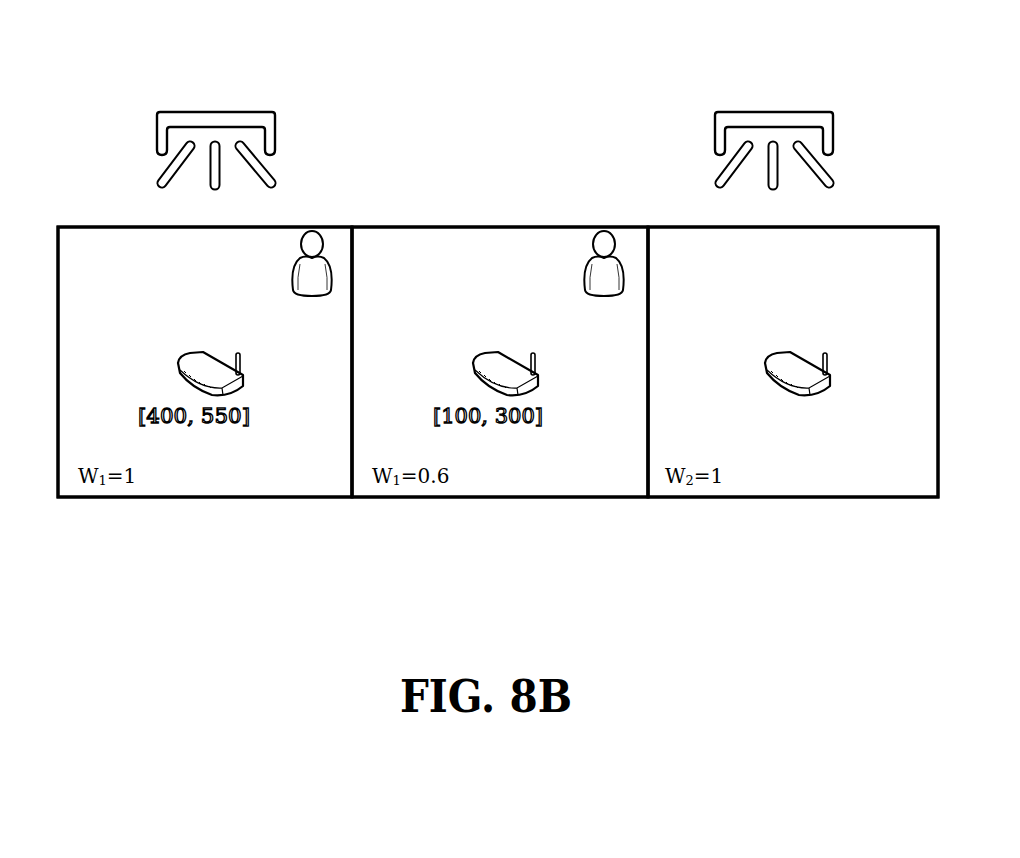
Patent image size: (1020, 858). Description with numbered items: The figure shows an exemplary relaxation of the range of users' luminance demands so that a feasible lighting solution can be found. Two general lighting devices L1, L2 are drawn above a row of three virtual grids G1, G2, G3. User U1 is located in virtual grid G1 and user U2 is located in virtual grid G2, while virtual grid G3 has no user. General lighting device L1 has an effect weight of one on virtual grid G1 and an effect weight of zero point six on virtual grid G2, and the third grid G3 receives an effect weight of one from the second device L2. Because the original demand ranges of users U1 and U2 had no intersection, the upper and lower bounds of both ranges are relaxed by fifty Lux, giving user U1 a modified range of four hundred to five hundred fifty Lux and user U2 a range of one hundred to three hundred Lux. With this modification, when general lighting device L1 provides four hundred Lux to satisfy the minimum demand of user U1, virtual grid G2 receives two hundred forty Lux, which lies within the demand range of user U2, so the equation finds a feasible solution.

The general lighting device L1 is at (217, 112).
The general lighting device L2 is at (775, 112).
The user U1 is at (293, 263).
The user U2 is at (586, 263).
The virtual grid G1 is at (192, 497).
The virtual grid G2 is at (497, 497).
The virtual grid G3 is at (785, 497).